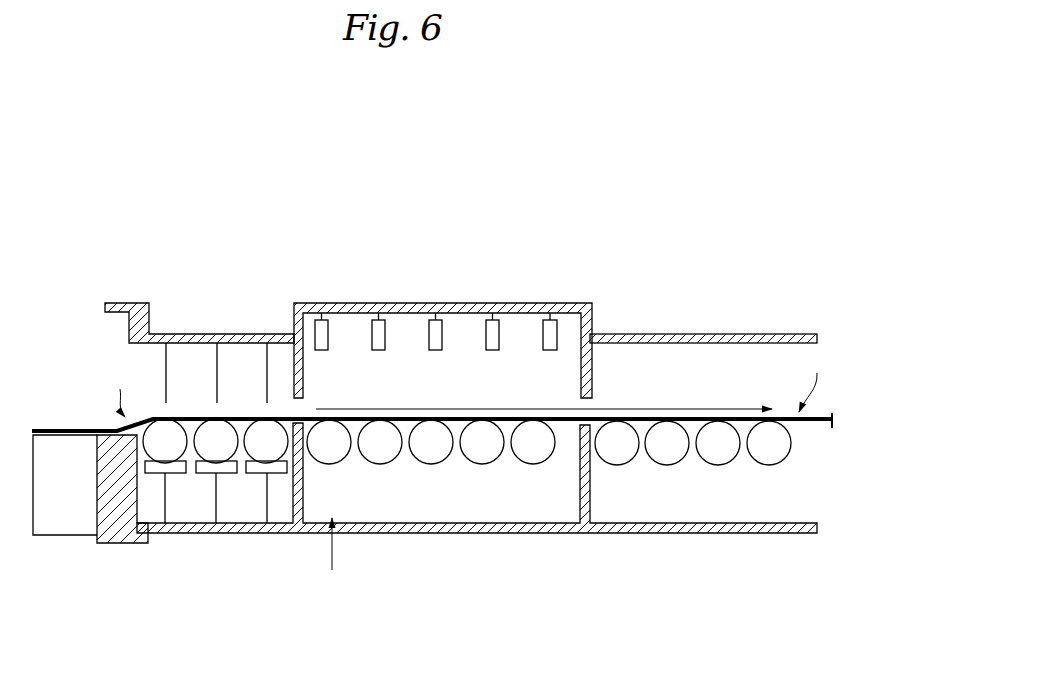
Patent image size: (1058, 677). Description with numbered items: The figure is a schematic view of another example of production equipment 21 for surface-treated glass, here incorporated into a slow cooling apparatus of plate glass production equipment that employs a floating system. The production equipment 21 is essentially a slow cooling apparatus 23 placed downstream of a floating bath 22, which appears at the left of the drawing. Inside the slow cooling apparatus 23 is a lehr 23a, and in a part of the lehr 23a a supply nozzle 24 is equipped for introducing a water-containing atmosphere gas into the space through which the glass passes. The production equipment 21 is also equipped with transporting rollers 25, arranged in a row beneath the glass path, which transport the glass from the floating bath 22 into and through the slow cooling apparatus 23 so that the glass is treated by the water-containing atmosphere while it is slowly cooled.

The production equipment 21 is at (657, 201).
The floating bath 22 is at (70, 521).
The slow cooling apparatus 23 is at (437, 300).
The lehr 23a is at (527, 342).
The supply nozzle 24 is at (389, 337).
The transporting rollers 25 is at (434, 453).